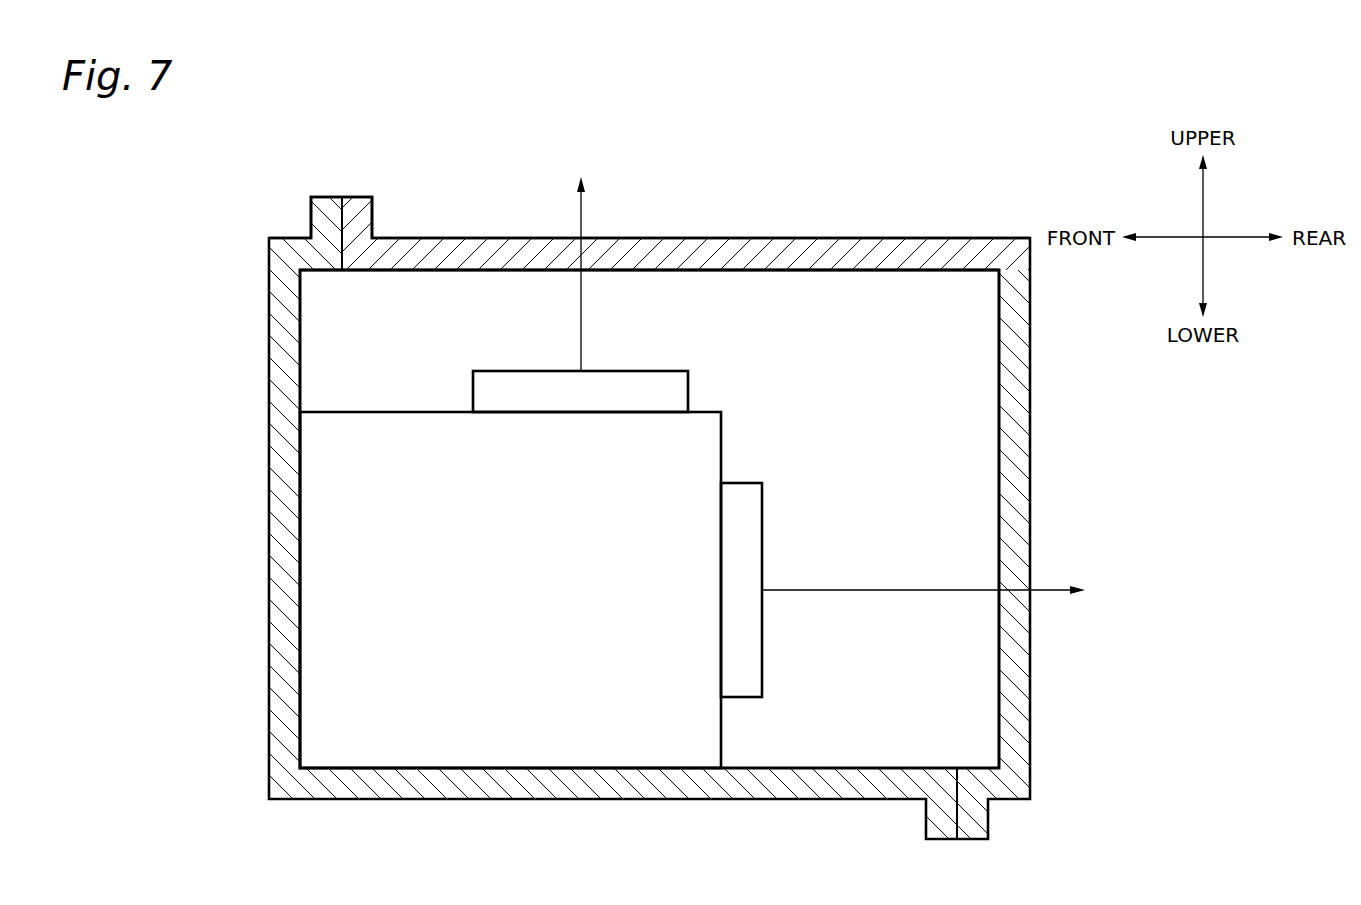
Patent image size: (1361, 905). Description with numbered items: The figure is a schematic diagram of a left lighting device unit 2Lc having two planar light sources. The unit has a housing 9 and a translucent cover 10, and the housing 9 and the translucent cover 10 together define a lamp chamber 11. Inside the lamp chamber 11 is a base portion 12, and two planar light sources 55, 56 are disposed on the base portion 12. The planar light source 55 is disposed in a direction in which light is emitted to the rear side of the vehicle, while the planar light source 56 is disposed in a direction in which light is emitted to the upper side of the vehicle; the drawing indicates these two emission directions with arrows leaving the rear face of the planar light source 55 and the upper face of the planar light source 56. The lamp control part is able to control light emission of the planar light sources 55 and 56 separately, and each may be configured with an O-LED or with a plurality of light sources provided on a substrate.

The left lighting device unit 2Lc is at (234, 172).
The housing 9 is at (280, 570).
The translucent cover 10 is at (713, 247).
The lamp chamber 11 is at (838, 303).
The base portion 12 is at (526, 593).
The planar light source 55 is at (750, 638).
The planar light source 56 is at (488, 375).